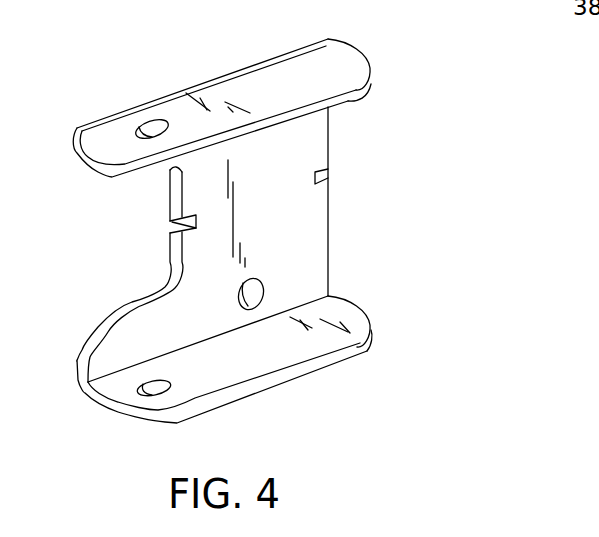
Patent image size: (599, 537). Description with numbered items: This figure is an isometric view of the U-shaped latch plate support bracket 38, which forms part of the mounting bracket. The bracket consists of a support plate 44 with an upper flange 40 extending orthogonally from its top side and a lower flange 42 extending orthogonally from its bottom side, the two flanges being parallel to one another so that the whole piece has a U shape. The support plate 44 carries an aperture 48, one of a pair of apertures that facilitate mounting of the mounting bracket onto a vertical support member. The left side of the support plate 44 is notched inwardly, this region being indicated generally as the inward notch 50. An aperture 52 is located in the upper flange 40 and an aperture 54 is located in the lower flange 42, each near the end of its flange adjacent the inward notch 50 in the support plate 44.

The U-shaped latch plate support bracket 38 is at (232, 254).
The upper flange 40 is at (239, 120).
The lower flange 42 is at (236, 359).
The support plate 44 is at (235, 265).
The aperture 48 is at (255, 305).
The inward notch 50 is at (170, 262).
The aperture 52 is at (148, 130).
The aperture 54 is at (155, 392).